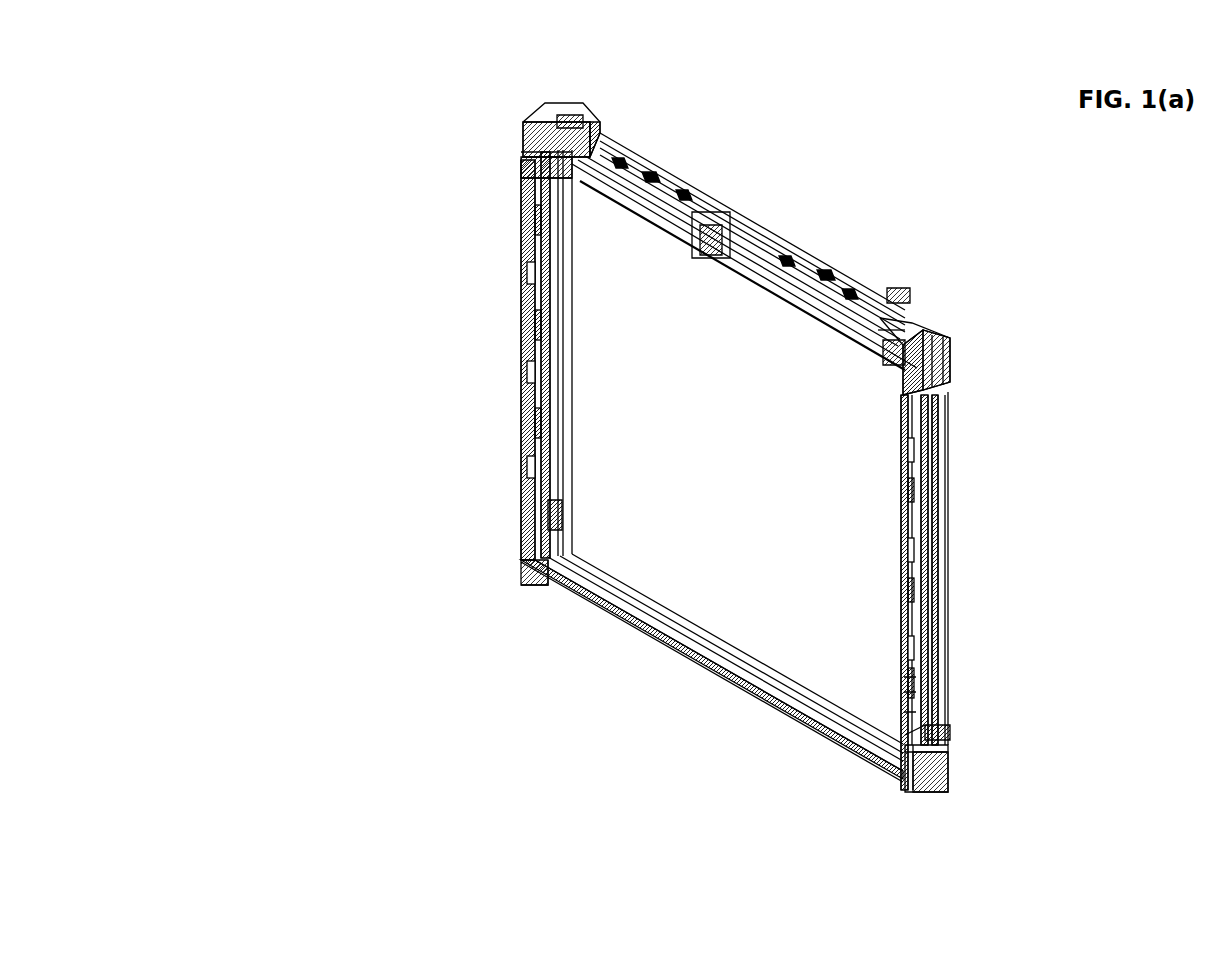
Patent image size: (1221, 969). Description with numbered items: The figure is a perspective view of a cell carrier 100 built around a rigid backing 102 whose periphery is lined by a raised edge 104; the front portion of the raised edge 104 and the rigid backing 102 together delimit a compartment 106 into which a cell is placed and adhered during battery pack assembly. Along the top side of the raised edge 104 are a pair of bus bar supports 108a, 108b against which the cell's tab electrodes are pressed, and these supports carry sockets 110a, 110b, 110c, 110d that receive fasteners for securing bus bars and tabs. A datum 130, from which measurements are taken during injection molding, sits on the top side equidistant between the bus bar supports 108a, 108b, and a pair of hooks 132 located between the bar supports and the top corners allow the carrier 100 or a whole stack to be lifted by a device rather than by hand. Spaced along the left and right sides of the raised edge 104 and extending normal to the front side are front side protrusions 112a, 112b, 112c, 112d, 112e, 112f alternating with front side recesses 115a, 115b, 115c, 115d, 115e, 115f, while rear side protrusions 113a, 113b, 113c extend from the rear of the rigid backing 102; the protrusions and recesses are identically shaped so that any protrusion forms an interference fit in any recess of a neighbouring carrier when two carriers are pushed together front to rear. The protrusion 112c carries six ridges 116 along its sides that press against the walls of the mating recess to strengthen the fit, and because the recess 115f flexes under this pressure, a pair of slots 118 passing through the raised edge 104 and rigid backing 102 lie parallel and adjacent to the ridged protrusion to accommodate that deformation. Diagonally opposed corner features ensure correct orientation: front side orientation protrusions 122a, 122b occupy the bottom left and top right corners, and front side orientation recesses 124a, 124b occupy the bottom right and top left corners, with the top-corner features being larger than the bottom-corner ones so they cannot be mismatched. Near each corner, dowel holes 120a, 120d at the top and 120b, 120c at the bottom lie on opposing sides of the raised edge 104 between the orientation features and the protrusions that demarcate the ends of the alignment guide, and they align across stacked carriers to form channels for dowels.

The cell carrier 100 is at (282, 167).
The rigid backing 102 is at (802, 623).
The raised edge 104 is at (602, 600).
The compartment 106 is at (724, 574).
The bus bar support 108a is at (823, 275).
The bus bar support 108b is at (648, 177).
The socket 110a is at (848, 293).
The socket 110b is at (785, 260).
The socket 110c is at (682, 195).
The socket 110d is at (618, 162).
The front side protrusion 112a is at (908, 490).
The front side protrusion 112b is at (905, 590).
The front side protrusion 112c is at (910, 677).
The front side protrusion 112d is at (523, 220).
The front side protrusion 112e is at (525, 325).
The front side protrusion 112f is at (525, 422).
The rear side protrusion 113a is at (947, 412).
The rear side protrusion 113b is at (945, 517).
The rear side protrusion 113c is at (945, 618).
The front side recess 115a is at (908, 450).
The front side recess 115b is at (908, 550).
The front side recess 115c is at (910, 648).
The front side recess 115d is at (533, 273).
The front side recess 115e is at (533, 372).
The front side recess 115f is at (533, 467).
The ridges 116 is at (910, 712).
The slots 118 is at (553, 483).
The dowel hole 120a is at (950, 382).
The dowel hole 120b is at (948, 727).
The dowel hole 120c is at (523, 515).
The dowel hole 120d is at (522, 164).
The front side orientation protrusion 122a is at (531, 557).
The front side orientation protrusion 122b is at (897, 352).
The front side orientation recess 124a is at (908, 780).
The front side orientation recess 124b is at (546, 140).
The datum 130 is at (720, 253).
The hooks 132 is at (563, 118).